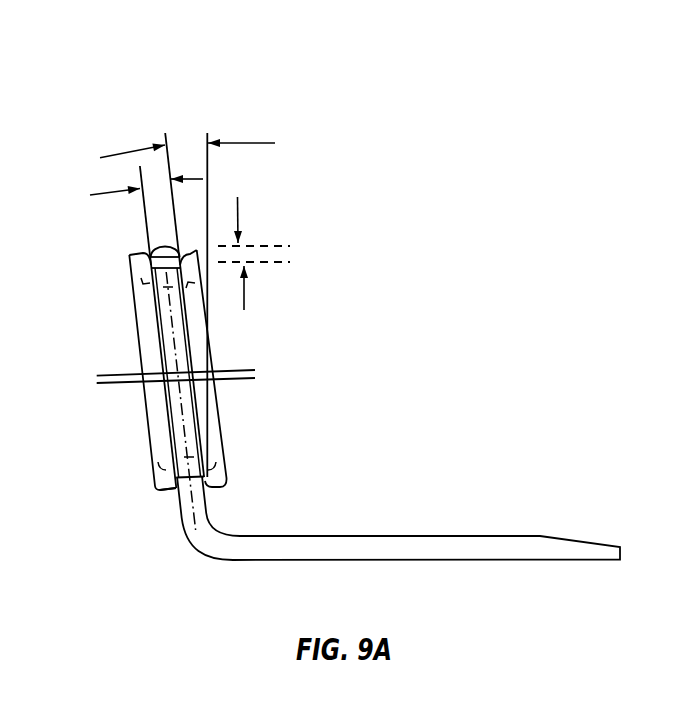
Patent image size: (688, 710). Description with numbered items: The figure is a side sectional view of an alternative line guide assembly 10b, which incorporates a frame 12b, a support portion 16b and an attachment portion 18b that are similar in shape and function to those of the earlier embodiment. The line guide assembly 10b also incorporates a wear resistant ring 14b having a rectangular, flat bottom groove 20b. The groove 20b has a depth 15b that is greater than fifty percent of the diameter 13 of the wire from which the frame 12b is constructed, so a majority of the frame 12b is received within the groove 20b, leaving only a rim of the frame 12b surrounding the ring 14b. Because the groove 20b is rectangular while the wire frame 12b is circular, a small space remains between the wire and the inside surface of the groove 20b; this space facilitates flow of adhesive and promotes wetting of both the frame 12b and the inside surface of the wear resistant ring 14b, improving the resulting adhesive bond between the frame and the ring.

The line guide assembly 10b is at (337, 335).
The frame 12b is at (157, 252).
The diameter 13 is at (107, 189).
The wear resistant ring 14b is at (142, 330).
The depth 15b is at (238, 218).
The support portion 16b is at (177, 518).
The attachment portion 18b is at (382, 535).
The groove 20b is at (173, 493).